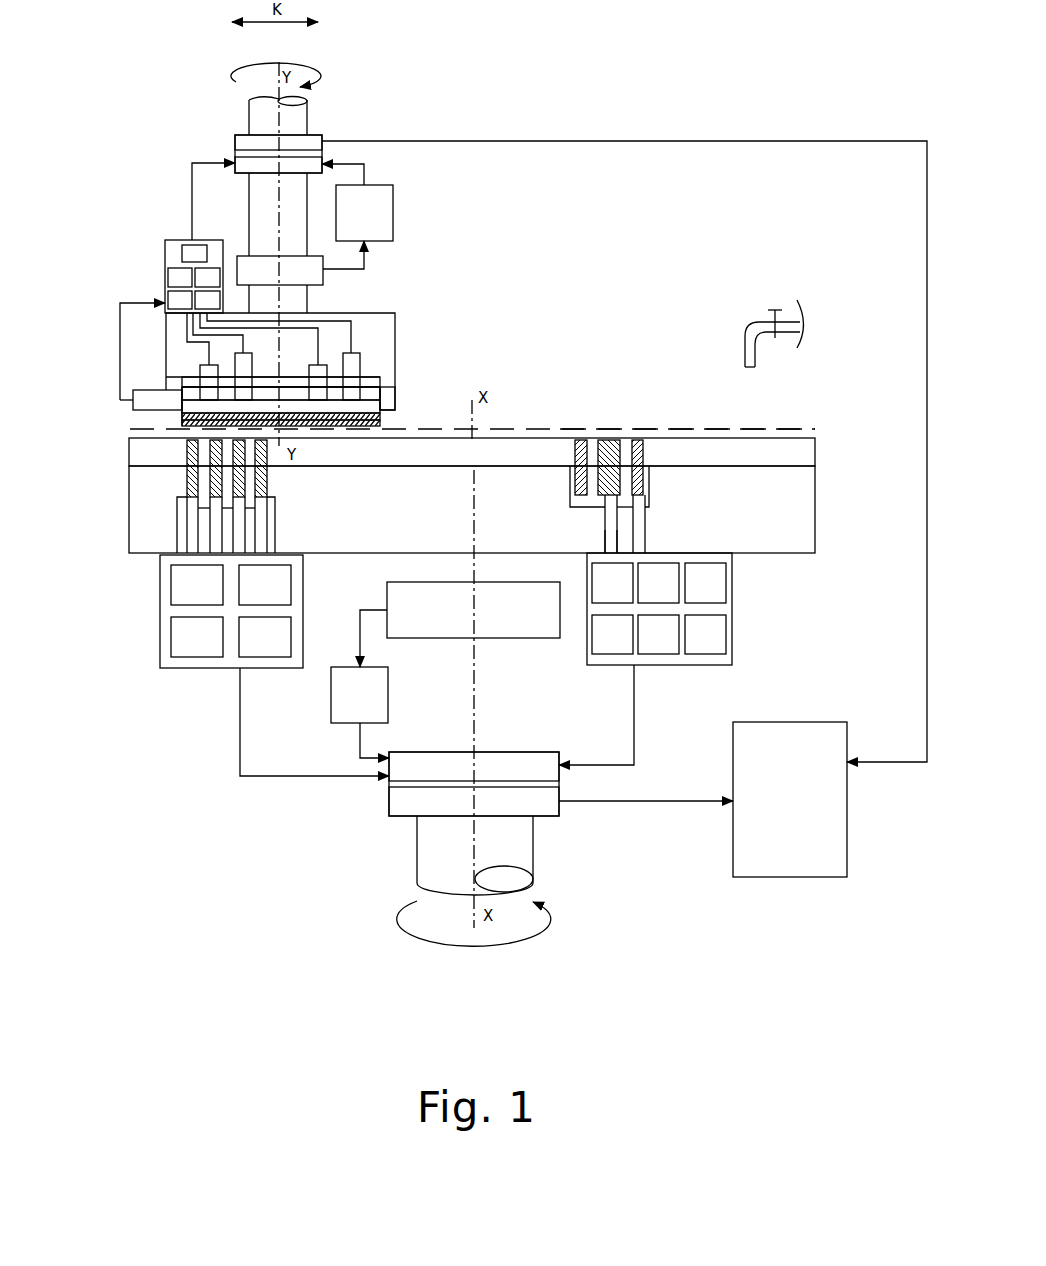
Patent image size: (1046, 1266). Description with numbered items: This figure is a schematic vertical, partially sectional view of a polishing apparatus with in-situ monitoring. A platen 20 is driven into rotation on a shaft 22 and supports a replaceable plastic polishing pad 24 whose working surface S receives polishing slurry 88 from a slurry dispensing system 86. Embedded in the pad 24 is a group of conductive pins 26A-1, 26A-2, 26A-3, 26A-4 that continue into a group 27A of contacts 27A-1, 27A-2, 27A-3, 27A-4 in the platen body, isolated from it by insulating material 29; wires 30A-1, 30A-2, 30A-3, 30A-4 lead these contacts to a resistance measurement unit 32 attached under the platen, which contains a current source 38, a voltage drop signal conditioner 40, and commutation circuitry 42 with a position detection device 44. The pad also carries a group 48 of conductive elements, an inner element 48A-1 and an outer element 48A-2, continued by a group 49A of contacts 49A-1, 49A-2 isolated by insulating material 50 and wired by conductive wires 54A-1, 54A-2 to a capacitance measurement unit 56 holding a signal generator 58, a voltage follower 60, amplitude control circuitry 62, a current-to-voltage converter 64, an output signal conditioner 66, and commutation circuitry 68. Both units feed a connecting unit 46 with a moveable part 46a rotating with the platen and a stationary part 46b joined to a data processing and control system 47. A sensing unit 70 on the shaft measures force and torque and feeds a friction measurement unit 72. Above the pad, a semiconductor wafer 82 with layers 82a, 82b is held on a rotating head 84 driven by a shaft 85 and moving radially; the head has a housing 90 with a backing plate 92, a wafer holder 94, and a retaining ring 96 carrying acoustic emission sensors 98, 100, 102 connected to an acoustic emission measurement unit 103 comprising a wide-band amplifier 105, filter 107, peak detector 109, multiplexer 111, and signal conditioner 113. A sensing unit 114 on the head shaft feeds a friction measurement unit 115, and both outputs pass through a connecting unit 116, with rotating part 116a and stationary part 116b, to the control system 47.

The platen 20 is at (813, 510).
The shaft 22 is at (535, 880).
The plastic polishing pad 24 is at (809, 453).
The conductive pin 26A-1 is at (192, 447).
The conductive pin 26A-2 is at (215, 452).
The conductive pin 26A-3 is at (238, 457).
The conductive pin 26A-4 is at (260, 463).
The group of contacts 27A is at (286, 487).
The contact 27A-1 is at (192, 485).
The contact 27A-2 is at (215, 488).
The contact 27A-3 is at (238, 491).
The contact 27A-4 is at (260, 494).
The insulating material 29 is at (253, 502).
The conductive wire 30A-1 is at (193, 518).
The conductive wire 30A-2 is at (216, 522).
The conductive wire 30A-3 is at (239, 526).
The conductive wire 30A-4 is at (261, 530).
The resistance measurement unit 32 is at (192, 668).
The current source 38 is at (197, 585).
The voltage drop signal conditioner 40 is at (265, 585).
The commutation circuitry 42 is at (265, 637).
The position detection device 44 is at (197, 637).
The connecting unit 46 is at (368, 806).
The moveable part 46a is at (545, 765).
The stationary part 46b is at (562, 817).
The data processing and control system 47 is at (733, 855).
The group of conductive elements 48 is at (595, 378).
The inner conductive element 48A-1 is at (611, 442).
The outer conductive element 48A-2 is at (578, 440).
The group of contacts 49A is at (660, 480).
The inner contact 49A-1 is at (648, 505).
The outer contact 49A-2 is at (643, 487).
The insulating material 50 is at (587, 500).
The conductive wire 54A-1 is at (612, 522).
The conductive wire 54A-2 is at (630, 512).
The capacitance measurement unit 56 is at (732, 650).
The high frequency low voltage signal generator 58 is at (612, 634).
The voltage follower 60 is at (612, 583).
The amplitude control circuitry 62 is at (658, 583).
The current-to-voltage converter 64 is at (705, 583).
The output signal conditioner 66 is at (705, 634).
The commutation circuitry 68 is at (658, 634).
The sensing unit 70 is at (387, 596).
The friction measurement unit 72 is at (331, 712).
The semiconductor wafer 82 is at (366, 408).
The layer of material 82a is at (382, 417).
The outer layer 82b is at (382, 424).
The rotating head 84 is at (463, 292).
The shaft 85 is at (303, 110).
The slurry dispensing system 86 is at (752, 323).
The polishing slurry 88 is at (757, 428).
The housing 90 is at (392, 313).
The backing plate 92 is at (368, 379).
The wafer holder 94 is at (370, 391).
The retaining ring 96 is at (387, 394).
The acoustic emission sensor 98 is at (140, 398).
The acoustic emission sensor 100 is at (243, 357).
The acoustic emission sensor 102 is at (202, 372).
The acoustic emission measurement unit 103 is at (165, 243).
The wide-band amplifier 105 is at (180, 300).
The high- or band-pass filter 107 is at (207, 300).
The peak detector 109 is at (207, 277).
The multiplexer 111 is at (180, 277).
The signal conditioner 113 is at (194, 253).
The sensing unit 114 is at (323, 283).
The friction measurement unit 115 is at (393, 224).
The connecting unit 116 is at (222, 128).
The moveable part 116a is at (233, 162).
The stationary part 116b is at (322, 137).
The working surface S is at (714, 437).